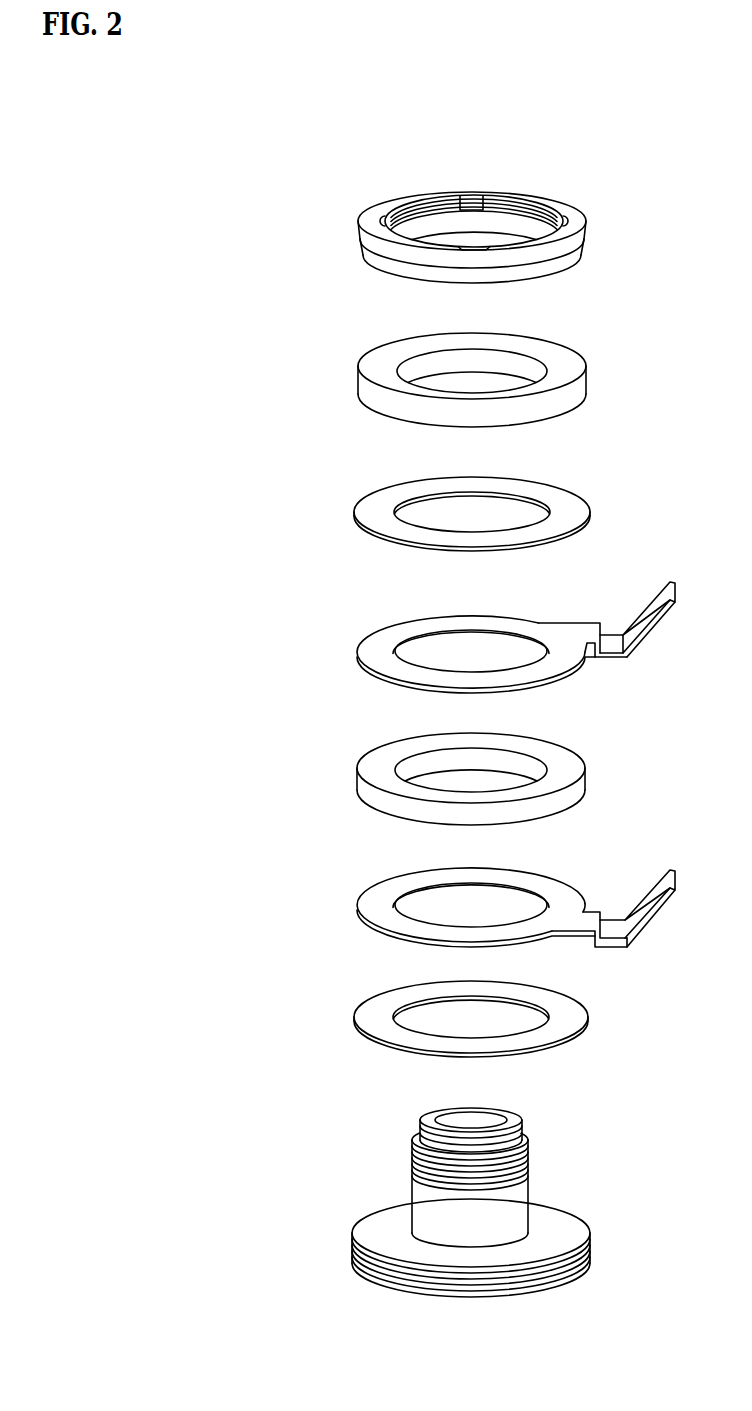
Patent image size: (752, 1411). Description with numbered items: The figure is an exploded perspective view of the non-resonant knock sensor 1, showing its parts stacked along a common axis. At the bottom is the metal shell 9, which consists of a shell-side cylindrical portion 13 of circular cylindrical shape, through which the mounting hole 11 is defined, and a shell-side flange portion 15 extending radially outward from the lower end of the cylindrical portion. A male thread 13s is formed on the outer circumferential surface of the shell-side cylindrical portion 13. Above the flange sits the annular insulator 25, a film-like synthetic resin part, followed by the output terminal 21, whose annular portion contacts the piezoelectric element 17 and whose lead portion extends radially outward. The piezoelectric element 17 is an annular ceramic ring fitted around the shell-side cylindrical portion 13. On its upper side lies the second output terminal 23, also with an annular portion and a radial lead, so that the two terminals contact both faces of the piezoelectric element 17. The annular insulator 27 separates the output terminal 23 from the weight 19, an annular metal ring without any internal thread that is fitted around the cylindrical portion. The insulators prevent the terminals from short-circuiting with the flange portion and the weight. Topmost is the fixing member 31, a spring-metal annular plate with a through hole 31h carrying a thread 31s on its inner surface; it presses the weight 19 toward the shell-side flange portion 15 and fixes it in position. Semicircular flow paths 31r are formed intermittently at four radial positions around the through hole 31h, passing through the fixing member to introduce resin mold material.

The non-resonant knock sensor 1 is at (235, 228).
The metal shell 9 is at (377, 1175).
The mounting hole 11 is at (492, 1115).
The shell-side cylindrical portion 13 is at (515, 1213).
The male thread 13s is at (533, 1140).
The shell-side flange portion 15 is at (590, 1252).
The piezoelectric element 17 is at (580, 785).
The weight 19 is at (580, 387).
The output terminal 21 is at (573, 887).
The output terminal 23 is at (573, 667).
The insulator 25 is at (592, 1015).
The insulator 27 is at (590, 518).
The fixing member 31 is at (587, 247).
The through hole 31h is at (440, 228).
The flow path 31r is at (472, 196).
The thread 31s is at (507, 200).